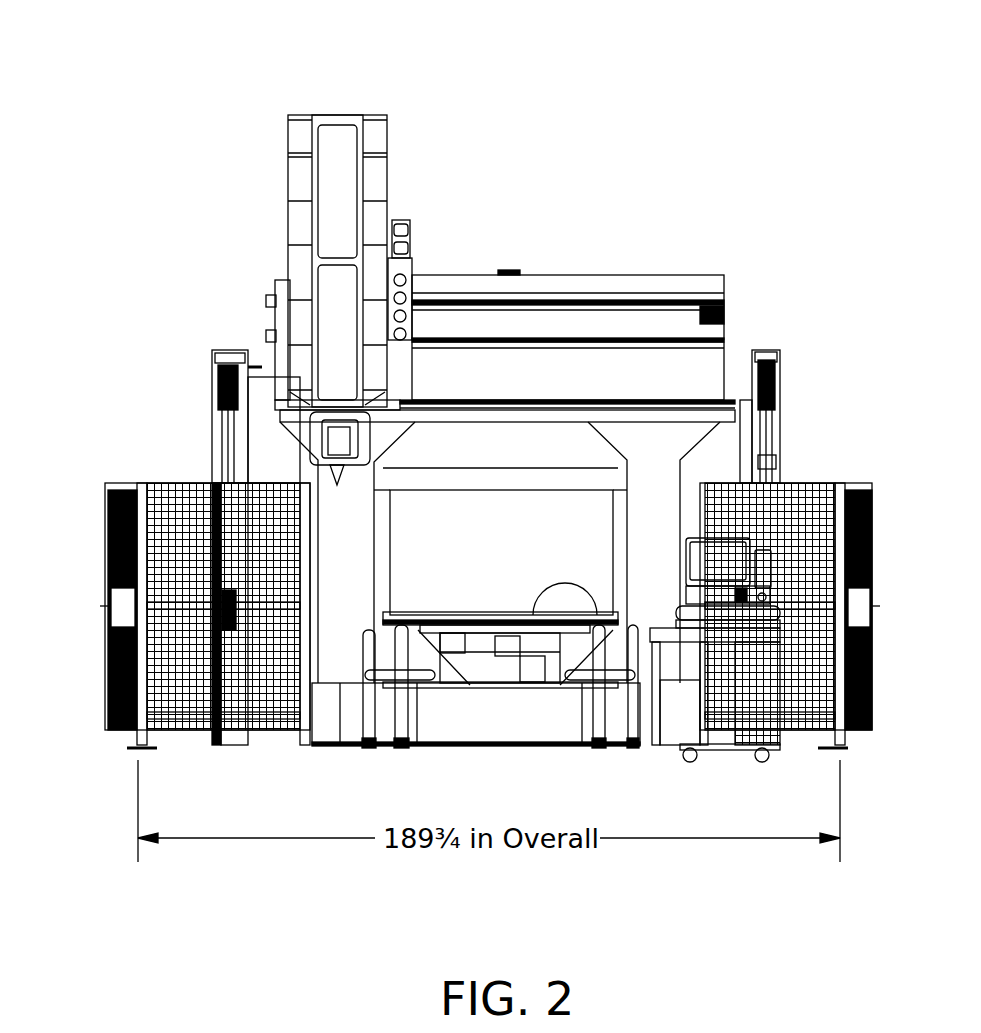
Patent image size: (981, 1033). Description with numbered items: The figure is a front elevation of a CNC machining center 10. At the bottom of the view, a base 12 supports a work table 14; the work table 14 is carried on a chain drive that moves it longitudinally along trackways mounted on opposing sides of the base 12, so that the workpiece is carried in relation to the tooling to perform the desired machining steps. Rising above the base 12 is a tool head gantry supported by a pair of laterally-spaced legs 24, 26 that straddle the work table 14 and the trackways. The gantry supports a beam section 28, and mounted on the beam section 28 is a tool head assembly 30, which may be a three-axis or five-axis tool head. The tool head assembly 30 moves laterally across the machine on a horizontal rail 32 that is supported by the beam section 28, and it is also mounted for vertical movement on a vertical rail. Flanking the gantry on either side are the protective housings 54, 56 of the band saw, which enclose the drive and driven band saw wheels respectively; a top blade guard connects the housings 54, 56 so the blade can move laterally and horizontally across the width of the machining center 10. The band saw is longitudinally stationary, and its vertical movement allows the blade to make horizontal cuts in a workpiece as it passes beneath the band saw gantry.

The CNC machining center 10 is at (576, 112).
The base 12 is at (457, 723).
The work table 14 is at (603, 650).
The leg 24 is at (348, 670).
The leg 26 is at (658, 587).
The beam section 28 is at (712, 362).
The tool head assembly 30 is at (330, 185).
The horizontal rail 32 is at (678, 285).
The protective housing 54 is at (210, 432).
The protective housing 56 is at (723, 445).